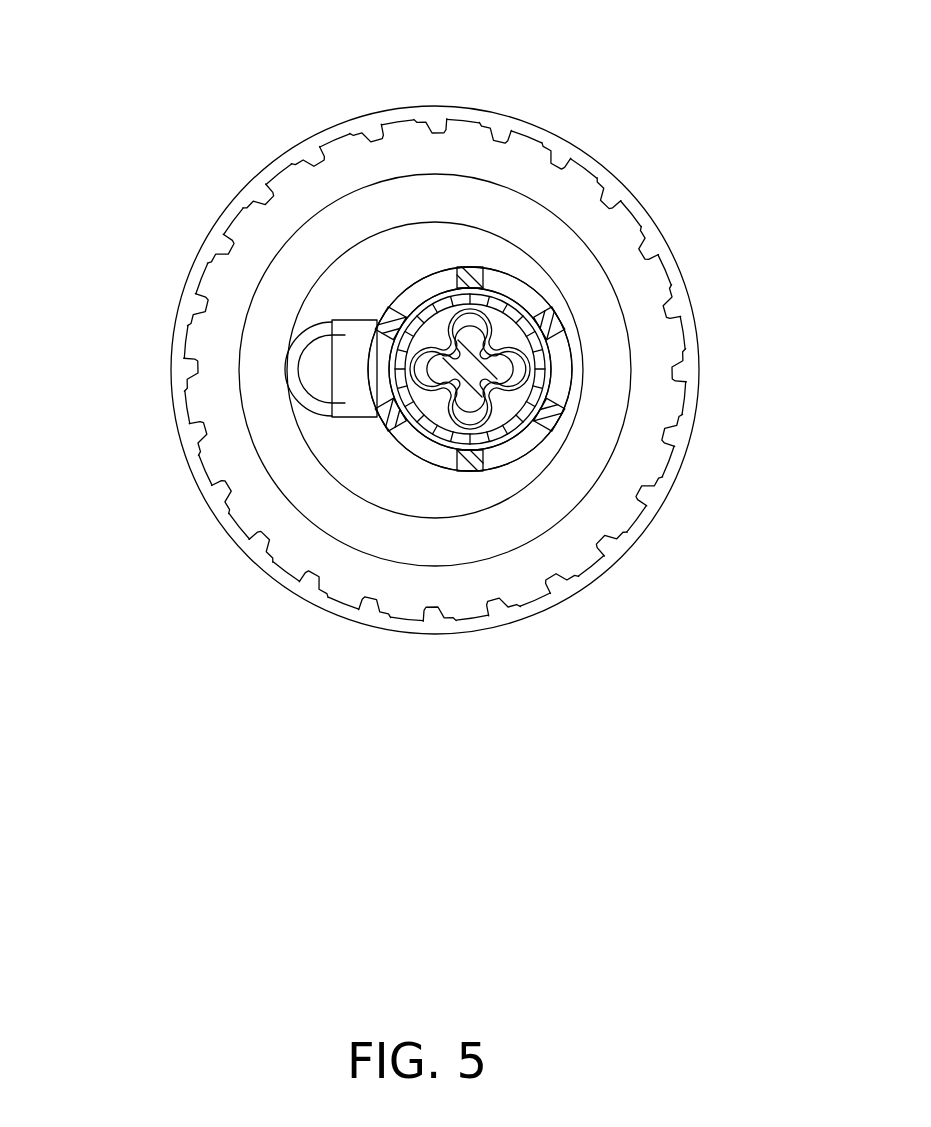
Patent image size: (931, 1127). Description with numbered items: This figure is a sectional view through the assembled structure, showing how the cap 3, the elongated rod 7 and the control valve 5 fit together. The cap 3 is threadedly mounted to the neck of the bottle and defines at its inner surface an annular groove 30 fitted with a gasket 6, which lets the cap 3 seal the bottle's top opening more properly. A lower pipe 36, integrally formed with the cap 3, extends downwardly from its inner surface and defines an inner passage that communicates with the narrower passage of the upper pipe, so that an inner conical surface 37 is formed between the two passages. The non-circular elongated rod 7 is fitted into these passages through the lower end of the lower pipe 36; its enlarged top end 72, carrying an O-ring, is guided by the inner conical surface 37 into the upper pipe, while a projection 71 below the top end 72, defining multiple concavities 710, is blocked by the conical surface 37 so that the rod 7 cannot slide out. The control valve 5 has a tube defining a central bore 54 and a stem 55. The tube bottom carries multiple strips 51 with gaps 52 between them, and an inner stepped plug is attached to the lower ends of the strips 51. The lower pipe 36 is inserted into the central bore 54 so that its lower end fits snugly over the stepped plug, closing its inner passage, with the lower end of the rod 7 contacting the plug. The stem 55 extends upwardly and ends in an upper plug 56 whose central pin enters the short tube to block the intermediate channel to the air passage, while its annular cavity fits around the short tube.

The cap 3 is at (552, 143).
The annular groove 30 is at (612, 532).
The control valve 5 is at (527, 283).
The gasket 6 is at (587, 462).
The elongated rod 7 is at (472, 363).
The projection 71 is at (425, 367).
The concavities 710 is at (448, 347).
The top end 72 is at (435, 403).
The lower pipe 36 is at (542, 377).
The inner conical surface 37 is at (525, 335).
The strips 51 is at (547, 414).
The gaps 52 is at (515, 447).
The central bore 54 is at (441, 440).
The stem 55 is at (350, 386).
The upper plug 56 is at (320, 382).